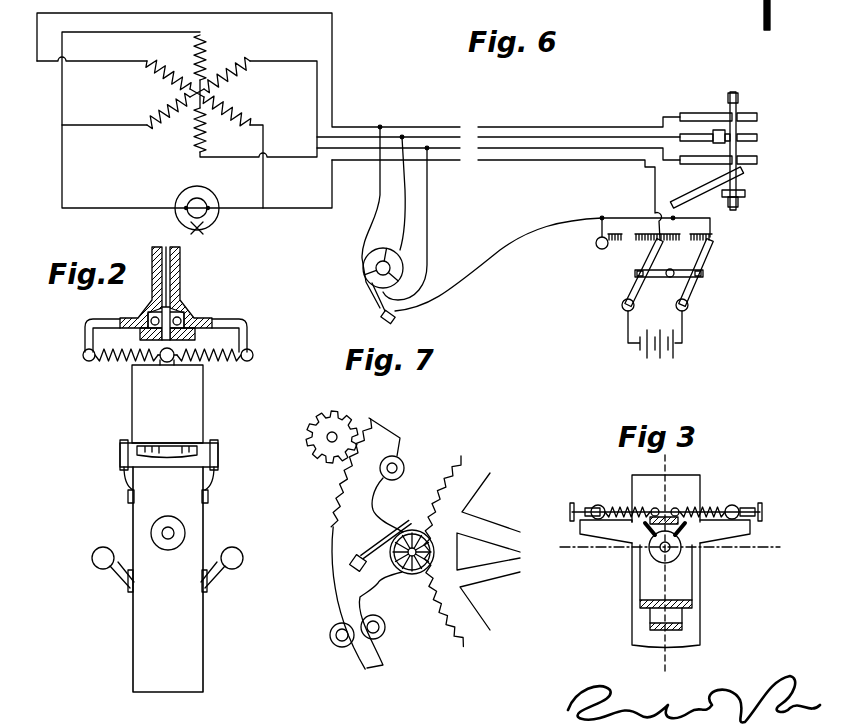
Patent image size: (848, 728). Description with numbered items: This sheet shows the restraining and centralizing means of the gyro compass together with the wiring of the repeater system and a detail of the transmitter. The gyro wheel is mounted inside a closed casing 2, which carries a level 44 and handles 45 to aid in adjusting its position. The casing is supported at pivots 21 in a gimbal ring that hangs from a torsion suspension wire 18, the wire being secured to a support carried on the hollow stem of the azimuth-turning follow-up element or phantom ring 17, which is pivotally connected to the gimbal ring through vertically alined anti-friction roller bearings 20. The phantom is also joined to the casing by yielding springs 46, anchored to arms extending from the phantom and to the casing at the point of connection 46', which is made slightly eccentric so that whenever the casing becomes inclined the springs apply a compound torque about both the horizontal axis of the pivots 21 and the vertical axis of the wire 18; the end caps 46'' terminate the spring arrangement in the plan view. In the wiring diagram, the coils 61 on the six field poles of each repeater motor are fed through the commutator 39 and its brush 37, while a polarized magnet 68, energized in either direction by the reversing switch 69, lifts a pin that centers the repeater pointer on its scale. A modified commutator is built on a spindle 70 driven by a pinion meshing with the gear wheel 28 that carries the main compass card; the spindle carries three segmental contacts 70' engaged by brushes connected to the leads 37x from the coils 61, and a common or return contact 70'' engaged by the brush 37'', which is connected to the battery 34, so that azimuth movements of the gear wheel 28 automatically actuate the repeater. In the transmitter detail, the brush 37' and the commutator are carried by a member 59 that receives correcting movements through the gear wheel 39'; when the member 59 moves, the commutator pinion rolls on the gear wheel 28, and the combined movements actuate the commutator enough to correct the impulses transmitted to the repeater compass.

In FIG. 6, the coils 61 is at (242, 70).
In FIG. 6, the magnet 68 is at (210, 220).
In FIG. 6, the commutator 39 is at (359, 268).
In FIG. 6, the brush 37 is at (361, 303).
In FIG. 6, the leads 37x is at (538, 148).
In FIG. 6, the brush 37' is at (673, 141).
In FIG. 7, the brush 37' is at (372, 545).
In FIG. 6, the brush 37'' is at (706, 193).
In FIG. 6, the spindle 70 is at (752, 141).
In FIG. 7, the spindle 70 is at (408, 576).
In FIG. 6, the segmental contacts 70' is at (772, 141).
In FIG. 7, the segmental contacts 70' is at (478, 551).
In FIG. 6, the common or return contact 70'' is at (754, 203).
In FIG. 6, the reversing switch 69 is at (703, 264).
In FIG. 6, the source of electrical supply 34 is at (655, 350).
In FIG. 2, the torsion suspension wire 18 is at (168, 279).
In FIG. 2, the anti-friction roller bearings 20 is at (177, 313).
In FIG. 3, the anti-friction roller bearings 20 is at (668, 549).
In FIG. 2, the phantom ring 17 is at (210, 322).
In FIG. 2, the springs 46 is at (167, 369).
In FIG. 3, the springs 46 is at (665, 502).
In FIG. 2, the point of connection 46' is at (178, 371).
In FIG. 3, the point of connection 46' is at (670, 502).
In FIG. 3, the spring end cap 46'' is at (667, 500).
In FIG. 2, the casing 2 is at (169, 528).
In FIG. 2, the level 44 is at (173, 457).
In FIG. 2, the pivots 21 is at (177, 520).
In FIG. 2, the handles 45 is at (92, 559).
In FIG. 7, the gear wheel 39' is at (325, 427).
In FIG. 7, the member 59 is at (380, 440).
In FIG. 7, the gear wheel 28 is at (459, 506).